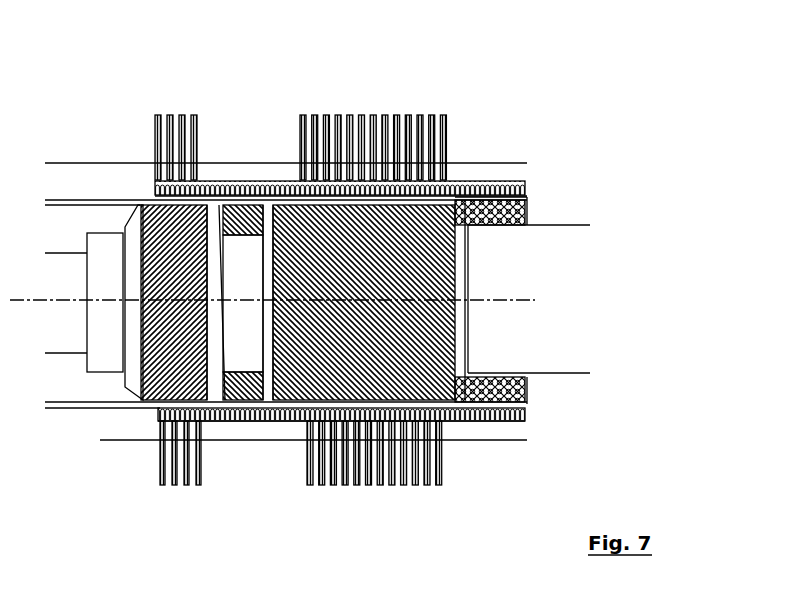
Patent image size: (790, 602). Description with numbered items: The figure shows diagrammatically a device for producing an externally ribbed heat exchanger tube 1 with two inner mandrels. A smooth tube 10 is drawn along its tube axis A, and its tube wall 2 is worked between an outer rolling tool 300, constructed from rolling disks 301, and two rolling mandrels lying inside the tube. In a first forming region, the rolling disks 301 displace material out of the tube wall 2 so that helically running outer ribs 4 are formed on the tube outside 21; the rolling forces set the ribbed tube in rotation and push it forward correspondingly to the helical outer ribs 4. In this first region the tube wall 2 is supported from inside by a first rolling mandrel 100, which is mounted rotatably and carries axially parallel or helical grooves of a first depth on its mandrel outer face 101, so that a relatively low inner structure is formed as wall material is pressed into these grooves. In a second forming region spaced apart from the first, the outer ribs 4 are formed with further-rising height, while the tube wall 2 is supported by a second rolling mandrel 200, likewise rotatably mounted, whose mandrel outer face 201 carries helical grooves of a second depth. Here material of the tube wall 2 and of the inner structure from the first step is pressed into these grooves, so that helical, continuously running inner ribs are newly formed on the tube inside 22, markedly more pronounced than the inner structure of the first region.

The heat exchanger tube 1 is at (532, 405).
The tube wall 2 is at (525, 200).
The outer ribs 4 is at (480, 180).
The smooth tube 10 is at (102, 193).
The tube outside 21 is at (517, 172).
The tube inside 22 is at (515, 225).
The first rolling mandrel 100 is at (135, 355).
The mandrel outer face of the first rolling mandrel 101 is at (207, 348).
The second rolling mandrel 200 is at (268, 355).
The mandrel outer face of the second rolling mandrel 201 is at (303, 352).
The rolling tool 300 is at (178, 117).
The rolling disks 301 is at (358, 117).
The tube axis A is at (288, 300).